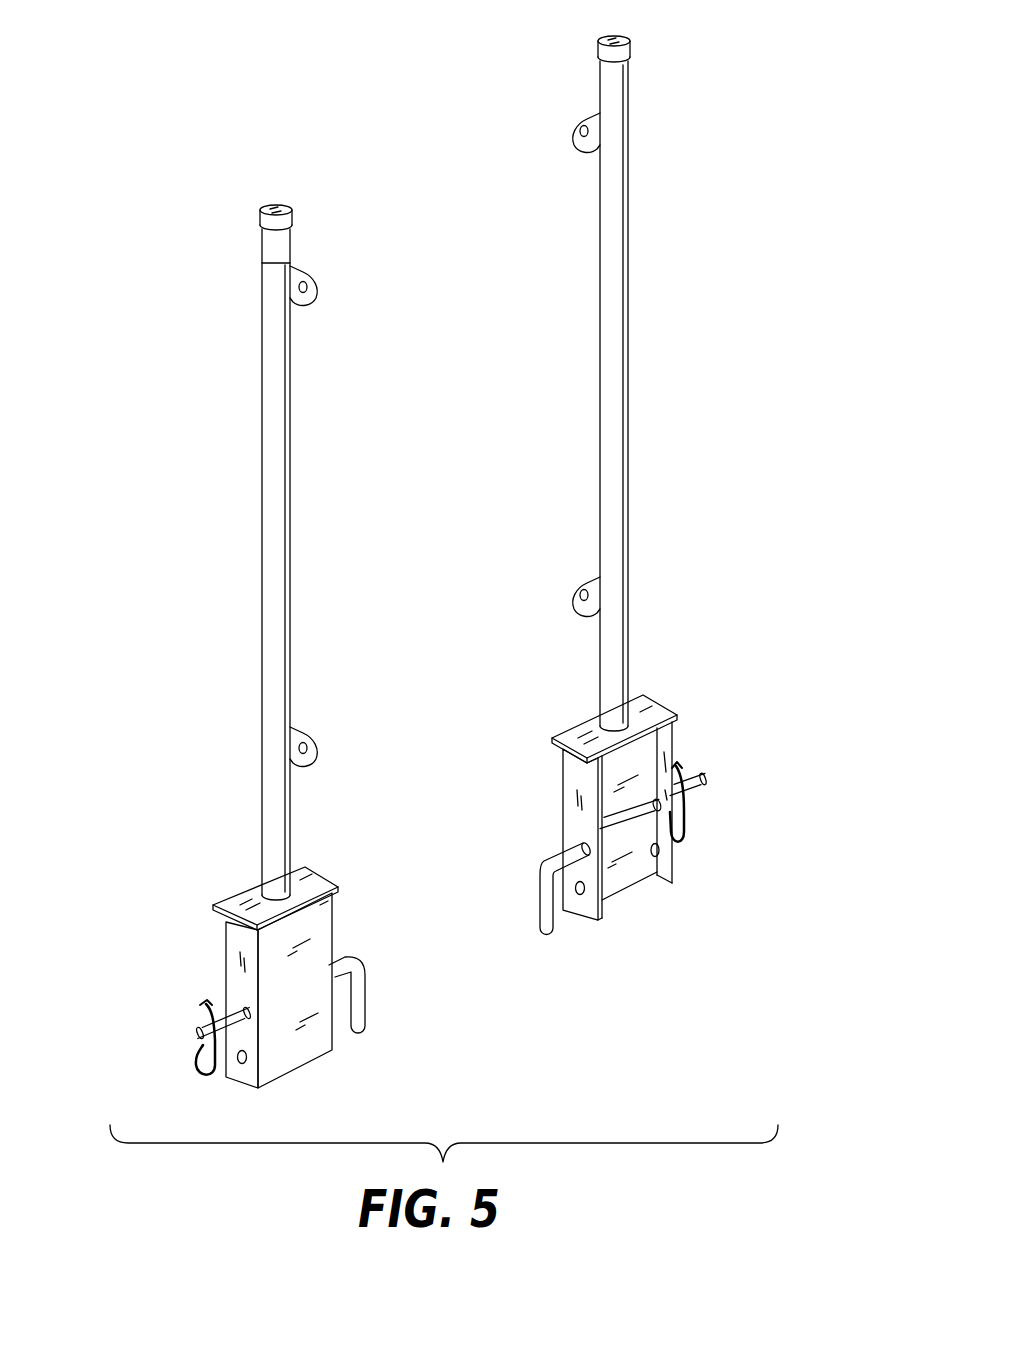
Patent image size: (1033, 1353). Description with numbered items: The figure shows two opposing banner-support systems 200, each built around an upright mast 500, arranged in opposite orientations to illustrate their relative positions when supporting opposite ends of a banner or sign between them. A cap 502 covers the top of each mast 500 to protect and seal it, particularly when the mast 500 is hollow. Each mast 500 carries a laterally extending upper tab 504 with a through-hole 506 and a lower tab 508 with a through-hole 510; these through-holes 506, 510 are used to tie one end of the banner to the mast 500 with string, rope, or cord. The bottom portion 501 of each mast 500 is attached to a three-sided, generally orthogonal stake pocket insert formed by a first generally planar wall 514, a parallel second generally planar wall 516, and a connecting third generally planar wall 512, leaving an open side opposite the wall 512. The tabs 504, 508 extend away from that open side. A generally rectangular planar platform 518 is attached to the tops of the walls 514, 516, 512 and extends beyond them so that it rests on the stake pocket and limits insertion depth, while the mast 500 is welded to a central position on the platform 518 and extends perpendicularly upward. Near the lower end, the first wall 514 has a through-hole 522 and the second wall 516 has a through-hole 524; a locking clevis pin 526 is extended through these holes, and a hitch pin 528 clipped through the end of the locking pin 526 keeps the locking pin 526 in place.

The system 200 is at (146, 342).
The mast 500 is at (262, 540).
The bottom portion 501 is at (117, 906).
The cap 502 is at (275, 205).
The upper tab 504 is at (300, 265).
The through-hole 506 is at (340, 325).
The lower tab 508 is at (305, 728).
The through-hole 510 is at (350, 742).
The third generally planar wall 512 is at (305, 1055).
The first generally planar wall 514 is at (240, 978).
The second generally planar wall 516 is at (338, 915).
The platform 518 is at (338, 873).
The through-hole 522 is at (228, 1086).
The through-hole 524 is at (695, 862).
The locking clevis pin 526 is at (368, 985).
The hitch pin 528 is at (195, 1063).